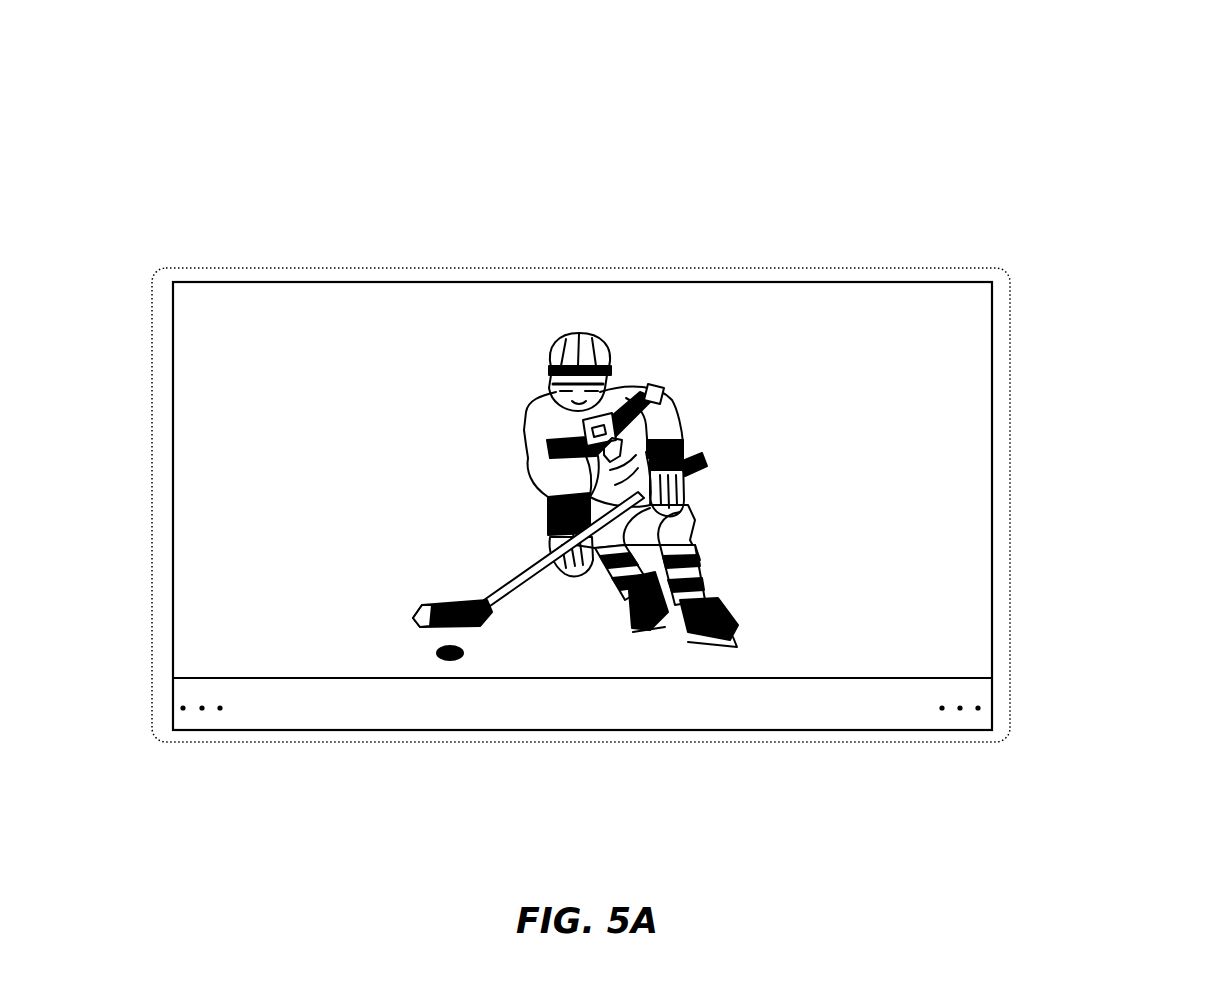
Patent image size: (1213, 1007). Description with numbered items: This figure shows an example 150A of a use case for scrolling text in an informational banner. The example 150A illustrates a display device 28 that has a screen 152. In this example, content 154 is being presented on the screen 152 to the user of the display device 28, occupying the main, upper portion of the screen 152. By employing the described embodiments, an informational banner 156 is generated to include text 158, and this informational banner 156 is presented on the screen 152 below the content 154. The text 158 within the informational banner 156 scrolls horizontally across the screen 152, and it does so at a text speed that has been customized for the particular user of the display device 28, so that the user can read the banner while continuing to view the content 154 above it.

The example 150A is at (623, 413).
The display device 28 is at (908, 268).
The screen 152 is at (992, 360).
The content 154 is at (375, 451).
The informational banner 156 is at (135, 682).
The text 158 is at (400, 720).